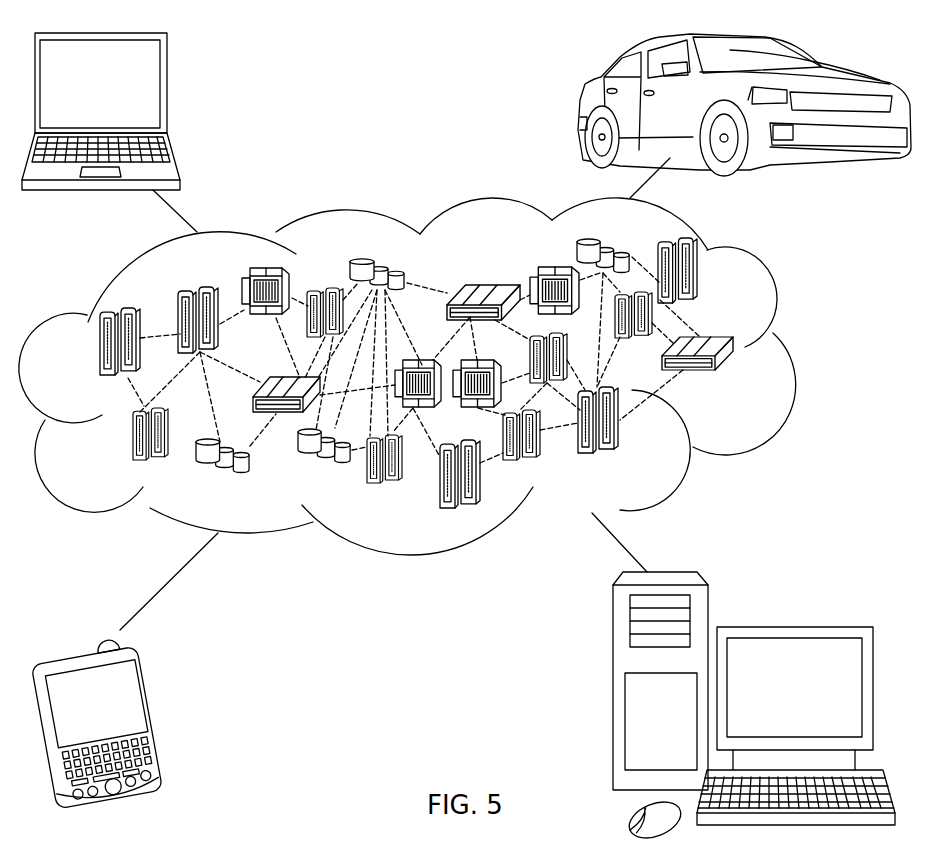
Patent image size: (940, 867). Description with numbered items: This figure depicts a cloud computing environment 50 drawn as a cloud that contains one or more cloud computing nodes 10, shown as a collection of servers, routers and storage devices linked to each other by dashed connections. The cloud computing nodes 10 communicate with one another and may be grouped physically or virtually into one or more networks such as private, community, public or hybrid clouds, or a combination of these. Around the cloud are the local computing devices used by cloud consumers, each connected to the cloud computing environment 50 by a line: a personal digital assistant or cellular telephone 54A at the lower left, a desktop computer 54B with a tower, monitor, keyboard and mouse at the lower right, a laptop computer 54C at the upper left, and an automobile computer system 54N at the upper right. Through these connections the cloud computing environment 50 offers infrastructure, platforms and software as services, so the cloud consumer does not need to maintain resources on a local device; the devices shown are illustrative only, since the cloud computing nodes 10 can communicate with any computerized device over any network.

The laptop computer 54C is at (167, 92).
The automobile computer system 54N is at (585, 108).
The cloud computing environment 50 is at (793, 356).
The cloud computing node 10 is at (737, 380).
The personal digital assistant (PDA) or cellular telephone 54A is at (157, 717).
The desktop computer 54B is at (790, 625).